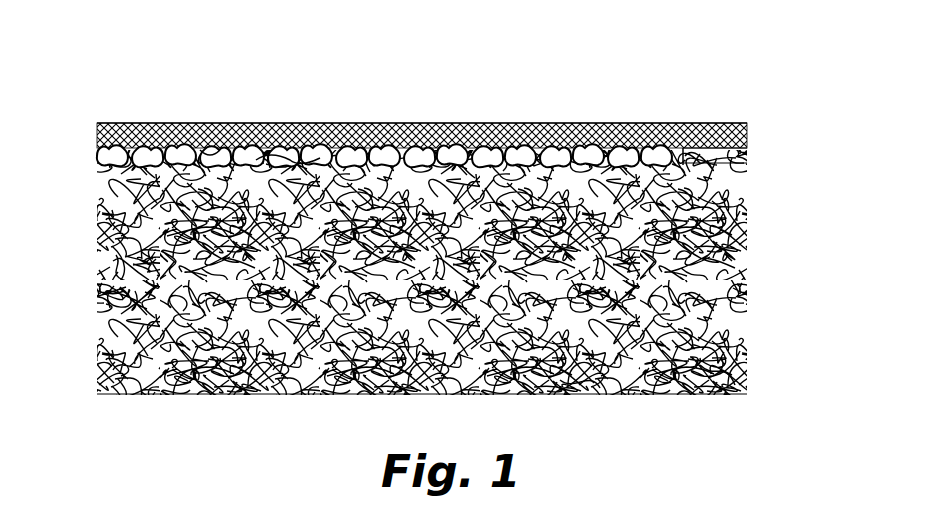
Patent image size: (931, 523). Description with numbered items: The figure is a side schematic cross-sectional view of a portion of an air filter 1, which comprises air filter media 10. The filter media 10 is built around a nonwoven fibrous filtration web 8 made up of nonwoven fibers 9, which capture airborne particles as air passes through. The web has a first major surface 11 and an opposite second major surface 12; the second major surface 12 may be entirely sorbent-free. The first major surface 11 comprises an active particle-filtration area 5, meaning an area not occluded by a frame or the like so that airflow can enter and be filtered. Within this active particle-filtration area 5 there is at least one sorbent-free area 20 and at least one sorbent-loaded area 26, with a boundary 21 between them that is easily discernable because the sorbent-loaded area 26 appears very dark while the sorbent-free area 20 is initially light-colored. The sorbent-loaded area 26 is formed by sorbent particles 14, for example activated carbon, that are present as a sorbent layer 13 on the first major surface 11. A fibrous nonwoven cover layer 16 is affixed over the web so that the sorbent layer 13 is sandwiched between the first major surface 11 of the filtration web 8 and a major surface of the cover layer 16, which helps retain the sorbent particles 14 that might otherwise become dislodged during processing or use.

The air filter 1 is at (742, 42).
The active particle-filtration area 5 is at (461, 104).
The nonwoven fibrous filtration web 8 is at (569, 395).
The nonwoven fibers 9 is at (713, 375).
The air filter media 10 is at (112, 406).
The first major surface 11 is at (718, 163).
The second major surface 12 is at (228, 394).
The sorbent layer 13 is at (94, 154).
The sorbent particles 14 is at (310, 148).
The fibrous nonwoven cover layer 16 is at (527, 124).
The sorbent-free area 20 is at (724, 150).
The boundary 21 is at (690, 150).
The sorbent-loaded area 26 is at (210, 148).